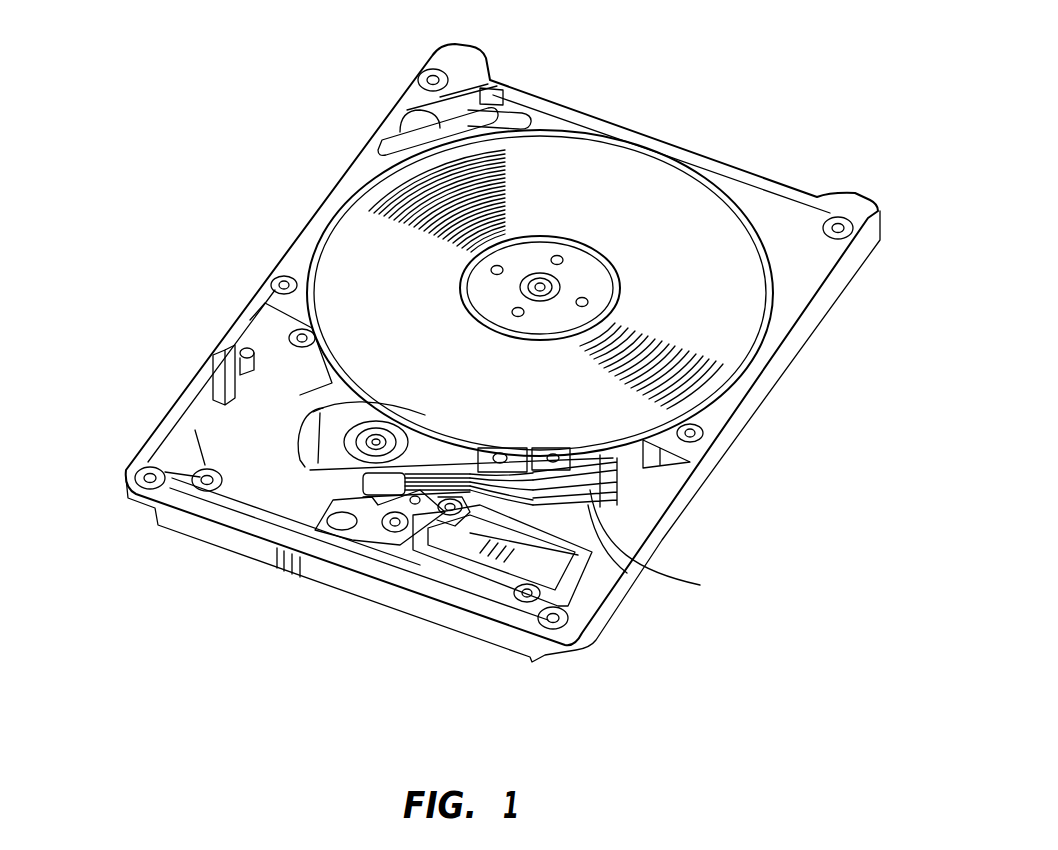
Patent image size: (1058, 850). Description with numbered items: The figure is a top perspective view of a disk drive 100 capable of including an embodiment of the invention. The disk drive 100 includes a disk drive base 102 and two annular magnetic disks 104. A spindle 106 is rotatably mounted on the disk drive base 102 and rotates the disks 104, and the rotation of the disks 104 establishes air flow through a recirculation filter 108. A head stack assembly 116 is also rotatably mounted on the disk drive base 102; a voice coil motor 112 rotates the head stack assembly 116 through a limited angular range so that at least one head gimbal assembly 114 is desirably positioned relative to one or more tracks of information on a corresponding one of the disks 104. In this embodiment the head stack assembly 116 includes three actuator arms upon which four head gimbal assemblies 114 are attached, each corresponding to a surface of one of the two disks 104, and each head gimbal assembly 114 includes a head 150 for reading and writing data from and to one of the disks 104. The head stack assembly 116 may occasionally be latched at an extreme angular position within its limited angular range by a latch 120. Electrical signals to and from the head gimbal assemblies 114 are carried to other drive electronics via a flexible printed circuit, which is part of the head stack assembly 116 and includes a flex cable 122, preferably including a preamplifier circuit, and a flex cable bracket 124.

The disk drive 100 is at (733, 83).
The disk drive base 102 is at (200, 527).
The annular magnetic disks 104 is at (350, 257).
The spindle 106 is at (587, 273).
The recirculation filter 108 is at (410, 110).
The voice coil motor 112 is at (243, 442).
The head gimbal assembly 114 is at (598, 535).
The head stack assembly 116 is at (413, 440).
The latch 120 is at (230, 370).
The flex cable 122 is at (463, 467).
The flex cable bracket 124 is at (450, 552).
The head 150 is at (593, 500).